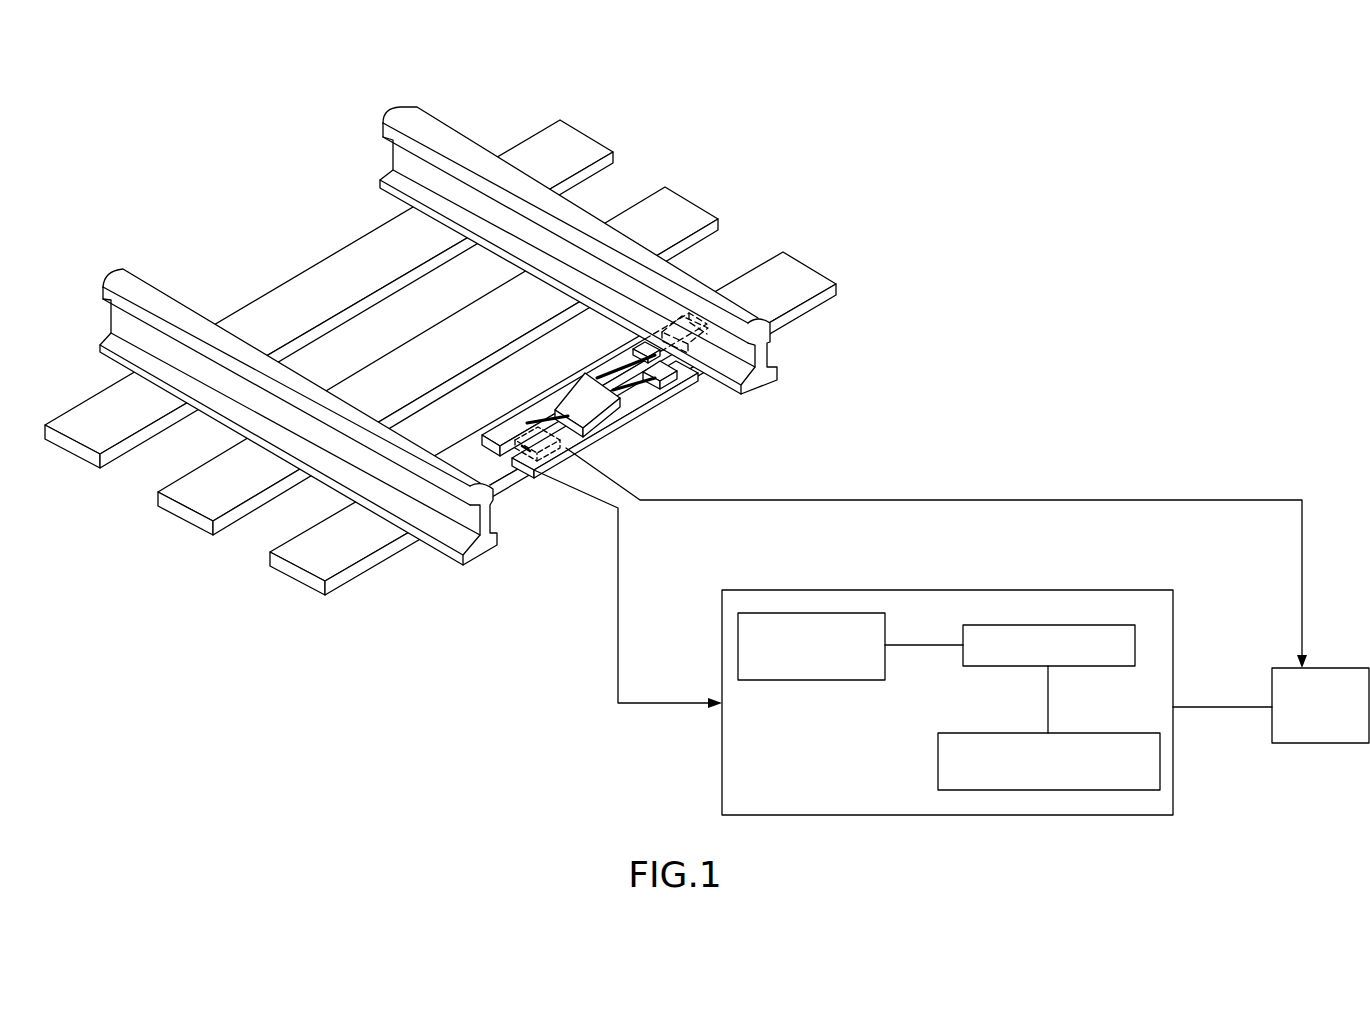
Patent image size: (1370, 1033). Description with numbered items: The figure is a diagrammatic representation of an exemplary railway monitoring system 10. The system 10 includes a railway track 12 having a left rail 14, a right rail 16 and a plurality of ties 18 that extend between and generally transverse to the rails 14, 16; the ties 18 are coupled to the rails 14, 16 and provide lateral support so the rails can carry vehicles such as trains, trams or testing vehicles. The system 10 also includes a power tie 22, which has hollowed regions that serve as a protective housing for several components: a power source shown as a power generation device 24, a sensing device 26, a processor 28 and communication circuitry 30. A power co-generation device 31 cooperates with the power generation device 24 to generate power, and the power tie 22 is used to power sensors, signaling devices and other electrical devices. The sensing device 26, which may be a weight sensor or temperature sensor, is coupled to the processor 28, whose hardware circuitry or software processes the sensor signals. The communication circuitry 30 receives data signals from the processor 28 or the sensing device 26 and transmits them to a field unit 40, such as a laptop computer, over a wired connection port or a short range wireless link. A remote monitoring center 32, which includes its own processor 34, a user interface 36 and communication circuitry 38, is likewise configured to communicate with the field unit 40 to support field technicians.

The railway monitoring system 10 is at (704, 449).
The railway track 12 is at (453, 375).
The left rail 14 is at (484, 548).
The right rail 16 is at (768, 385).
The ties 18 is at (68, 456).
The power tie 22 is at (296, 587).
The power generation device 24 is at (672, 387).
The sensing device 26 is at (612, 412).
The processor 28 is at (523, 423).
The communication circuitry 30 is at (580, 458).
The power co-generation device 31 is at (633, 348).
The remote monitoring center 32 is at (947, 672).
The processor 34 is at (1050, 624).
The user interface 36 is at (812, 611).
The communication circuitry 38 is at (938, 758).
The field unit 40 is at (1338, 668).